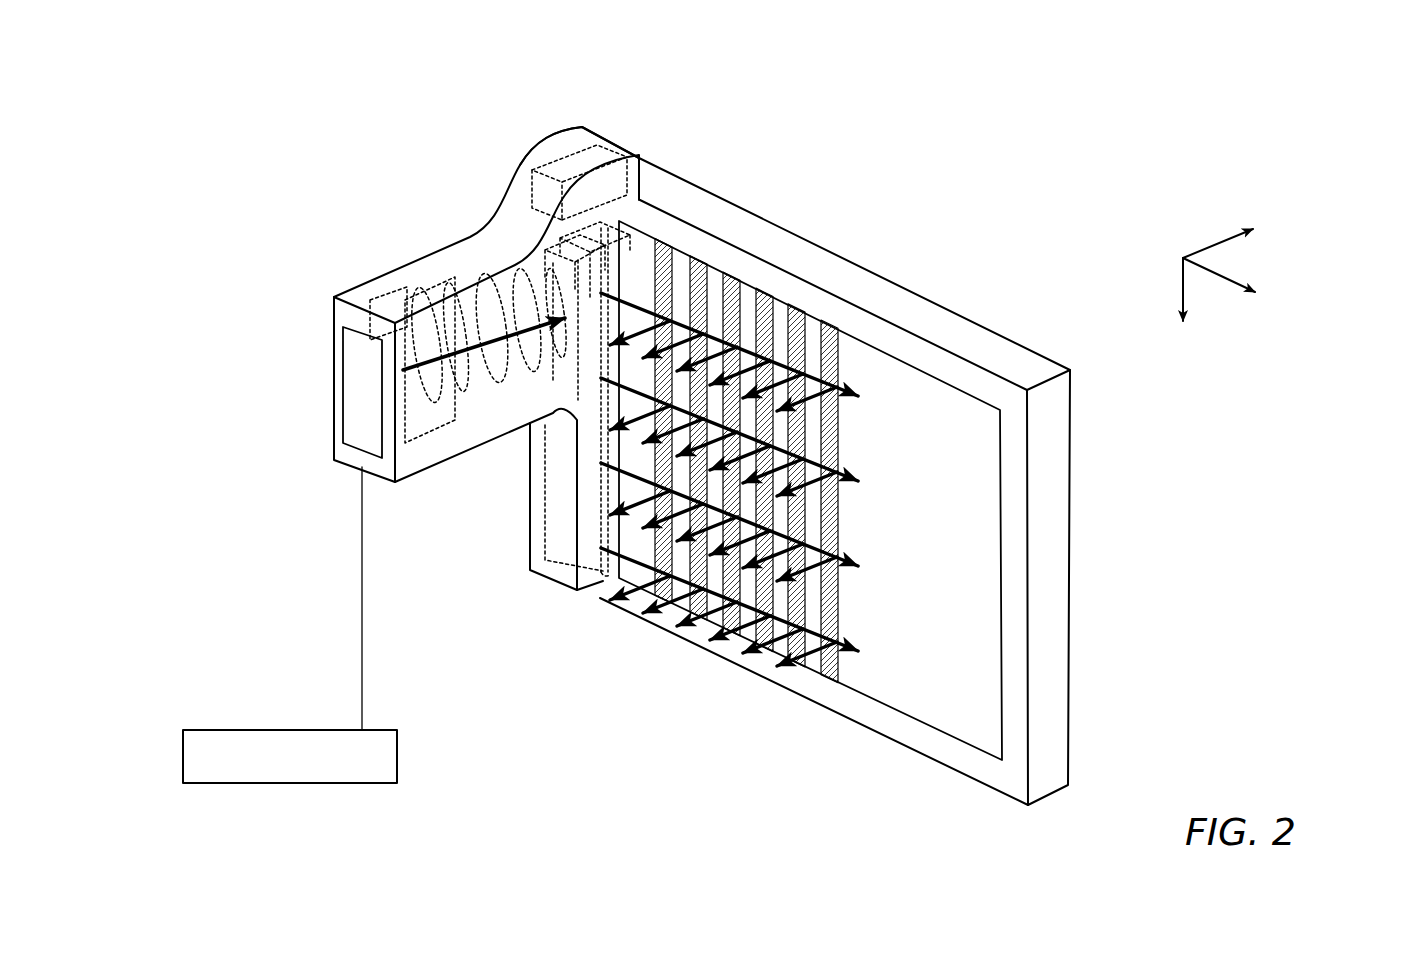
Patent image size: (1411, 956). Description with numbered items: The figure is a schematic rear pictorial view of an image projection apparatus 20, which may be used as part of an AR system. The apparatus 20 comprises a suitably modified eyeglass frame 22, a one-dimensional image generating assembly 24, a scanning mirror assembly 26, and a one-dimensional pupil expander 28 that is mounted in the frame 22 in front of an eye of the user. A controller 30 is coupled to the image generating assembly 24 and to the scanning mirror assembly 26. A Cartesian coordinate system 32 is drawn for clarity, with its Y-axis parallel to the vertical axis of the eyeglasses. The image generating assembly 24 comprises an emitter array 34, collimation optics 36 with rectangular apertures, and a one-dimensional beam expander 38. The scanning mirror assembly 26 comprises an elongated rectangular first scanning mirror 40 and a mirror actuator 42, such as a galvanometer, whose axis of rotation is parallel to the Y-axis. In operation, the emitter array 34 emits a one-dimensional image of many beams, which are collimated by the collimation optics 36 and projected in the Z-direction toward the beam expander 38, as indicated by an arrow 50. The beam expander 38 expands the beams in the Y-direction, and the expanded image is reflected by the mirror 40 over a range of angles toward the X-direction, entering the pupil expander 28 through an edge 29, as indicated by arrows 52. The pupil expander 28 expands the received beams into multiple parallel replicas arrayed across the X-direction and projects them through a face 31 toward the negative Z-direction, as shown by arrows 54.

The image projection apparatus 20 is at (193, 120).
The eyeglass frame 22 is at (842, 262).
The 1D image generating assembly 24 is at (445, 245).
The scanning mirror assembly 26 is at (552, 138).
The 1D pupil expander 28 is at (815, 365).
The edge 29 is at (618, 495).
The controller 30 is at (293, 730).
The face 31 is at (998, 445).
The Cartesian coordinate system 32 is at (1318, 208).
The emitter array 34 is at (355, 390).
The collimation optics 36 is at (470, 400).
The 1D beam expander 38 is at (555, 478).
The first scanning mirror 40 is at (625, 225).
The mirror actuator 42 is at (613, 150).
The arrow 50 is at (420, 330).
The arrows 52 is at (632, 305).
The arrows 54 is at (732, 660).